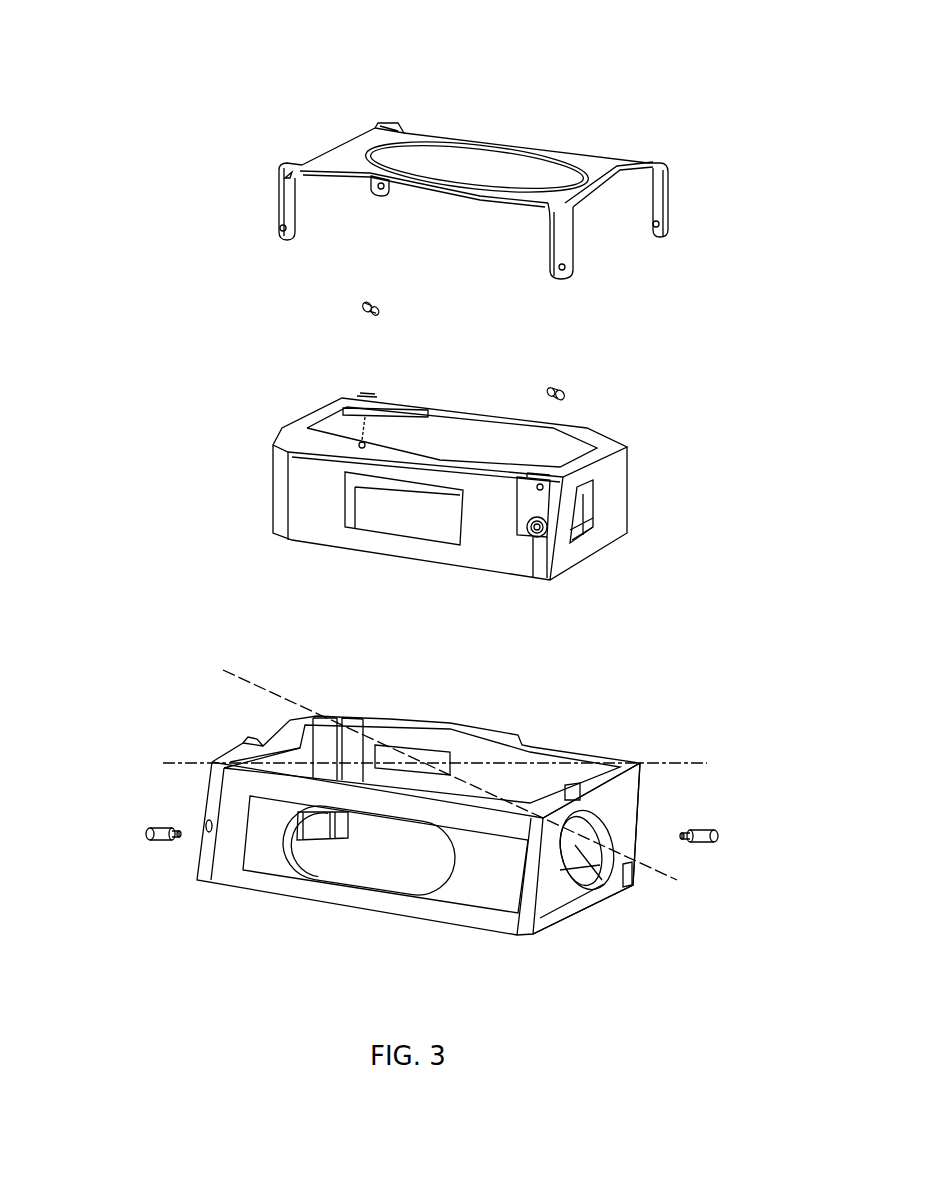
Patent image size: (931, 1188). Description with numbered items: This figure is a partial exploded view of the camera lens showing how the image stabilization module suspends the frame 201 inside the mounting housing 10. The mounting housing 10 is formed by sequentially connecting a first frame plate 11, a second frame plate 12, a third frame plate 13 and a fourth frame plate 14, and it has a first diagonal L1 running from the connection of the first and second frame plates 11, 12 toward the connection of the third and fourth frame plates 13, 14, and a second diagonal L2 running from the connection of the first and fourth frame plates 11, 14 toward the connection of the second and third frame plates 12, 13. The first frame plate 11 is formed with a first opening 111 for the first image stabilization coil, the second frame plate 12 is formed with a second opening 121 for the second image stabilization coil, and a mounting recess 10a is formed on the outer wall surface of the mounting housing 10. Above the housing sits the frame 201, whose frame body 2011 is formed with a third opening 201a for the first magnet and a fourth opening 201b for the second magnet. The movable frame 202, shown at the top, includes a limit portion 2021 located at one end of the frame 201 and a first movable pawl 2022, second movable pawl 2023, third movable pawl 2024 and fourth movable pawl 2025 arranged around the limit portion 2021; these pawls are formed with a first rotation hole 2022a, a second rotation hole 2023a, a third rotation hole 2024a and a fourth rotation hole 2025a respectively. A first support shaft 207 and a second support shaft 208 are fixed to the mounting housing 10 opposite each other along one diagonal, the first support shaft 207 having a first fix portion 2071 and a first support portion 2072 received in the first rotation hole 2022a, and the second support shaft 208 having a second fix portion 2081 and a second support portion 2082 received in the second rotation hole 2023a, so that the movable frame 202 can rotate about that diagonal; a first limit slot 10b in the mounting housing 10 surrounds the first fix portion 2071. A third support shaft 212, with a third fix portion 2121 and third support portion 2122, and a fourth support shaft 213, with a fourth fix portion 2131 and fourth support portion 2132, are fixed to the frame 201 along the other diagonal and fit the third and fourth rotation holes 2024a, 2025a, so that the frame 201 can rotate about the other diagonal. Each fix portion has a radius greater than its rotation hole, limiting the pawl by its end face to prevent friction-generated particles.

The movable frame 202 is at (780, 50).
The limit portion 2021 is at (502, 143).
The first movable pawl 2022 is at (298, 168).
The first rotation hole 2022a is at (282, 226).
The second movable pawl 2023 is at (668, 190).
The second rotation hole 2023a is at (657, 230).
The third movable pawl 2024 is at (567, 223).
The third rotation hole 2024a is at (563, 268).
The fourth movable pawl 2025 is at (386, 160).
The fourth rotation hole 2025a is at (383, 188).
The fourth support shaft 213 is at (272, 275).
The fourth fix portion 2131 is at (365, 303).
The fourth support portion 2132 is at (364, 312).
The third support shaft 212 is at (655, 332).
The third fix portion 2121 is at (563, 392).
The third support portion 2122 is at (553, 390).
The frame 201 is at (488, 488).
The frame body 2011 is at (597, 463).
The third opening 201a is at (400, 508).
The fourth opening 201b is at (580, 505).
The mounting housing 10 is at (548, 650).
The mounting recess 10a is at (263, 853).
The first limit slot 10b is at (205, 828).
The first frame plate 11 is at (352, 740).
The first opening 111 is at (375, 860).
The second frame plate 12 is at (580, 782).
The second opening 121 is at (602, 880).
The third frame plate 13 is at (423, 747).
The fourth frame plate 14 is at (287, 733).
The first diagonal L1 is at (442, 761).
The second diagonal L2 is at (436, 747).
The first support shaft 207 is at (80, 740).
The first fix portion 2071 is at (153, 827).
The first support portion 2072 is at (173, 826).
The second support shaft 208 is at (782, 763).
The second fix portion 2081 is at (701, 830).
The second support portion 2082 is at (686, 836).